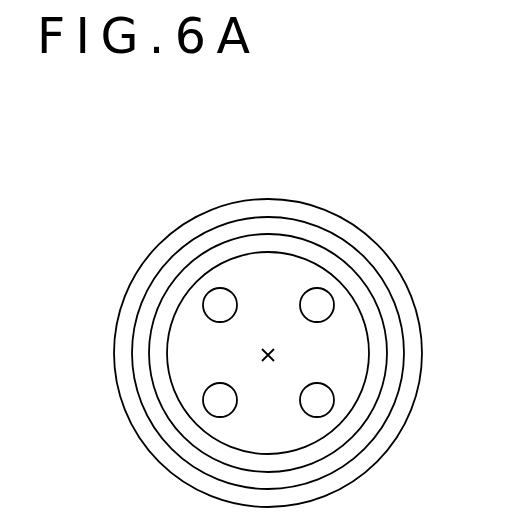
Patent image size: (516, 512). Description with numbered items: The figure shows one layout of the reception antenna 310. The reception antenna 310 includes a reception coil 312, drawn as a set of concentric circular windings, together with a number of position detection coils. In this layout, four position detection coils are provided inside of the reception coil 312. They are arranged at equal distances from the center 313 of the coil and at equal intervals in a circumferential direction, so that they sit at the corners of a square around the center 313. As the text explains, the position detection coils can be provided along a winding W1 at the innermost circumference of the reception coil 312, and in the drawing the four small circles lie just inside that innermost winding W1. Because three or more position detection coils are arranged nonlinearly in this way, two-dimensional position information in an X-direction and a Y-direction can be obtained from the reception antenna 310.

The reception antenna 310 is at (383, 150).
The reception coil 312 is at (330, 217).
The center 313 is at (268, 362).
The winding at an innermost circumference W1 is at (270, 252).